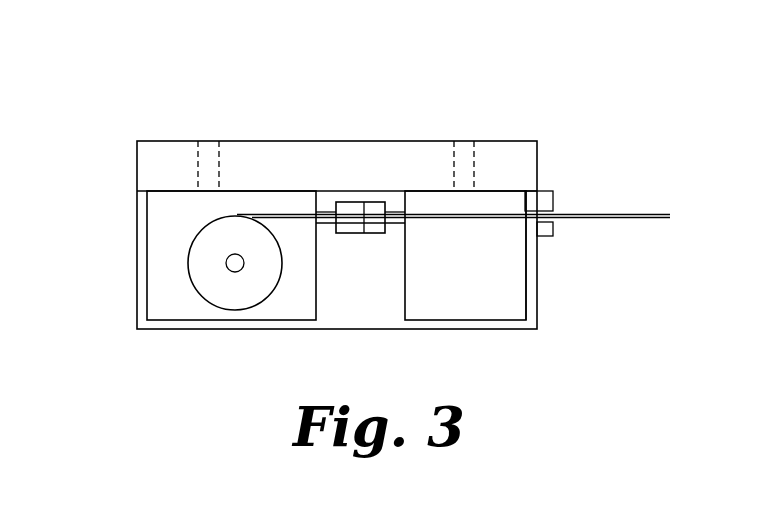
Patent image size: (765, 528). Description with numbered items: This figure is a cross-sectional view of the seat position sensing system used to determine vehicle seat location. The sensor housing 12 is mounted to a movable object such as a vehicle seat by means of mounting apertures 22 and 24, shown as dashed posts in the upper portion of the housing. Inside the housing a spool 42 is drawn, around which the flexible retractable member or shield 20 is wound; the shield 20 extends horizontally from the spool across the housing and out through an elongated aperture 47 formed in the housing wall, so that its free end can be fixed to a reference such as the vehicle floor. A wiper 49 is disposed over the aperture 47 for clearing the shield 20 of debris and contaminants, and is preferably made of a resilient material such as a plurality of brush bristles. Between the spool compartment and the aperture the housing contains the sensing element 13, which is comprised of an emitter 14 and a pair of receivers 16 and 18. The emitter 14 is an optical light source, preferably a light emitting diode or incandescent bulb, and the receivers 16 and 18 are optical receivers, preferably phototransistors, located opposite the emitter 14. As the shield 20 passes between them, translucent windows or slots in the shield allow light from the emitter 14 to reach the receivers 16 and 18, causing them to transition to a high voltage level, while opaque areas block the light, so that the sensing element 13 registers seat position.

The sensor housing 12 is at (145, 247).
The sensing element 13 is at (336, 233).
The emitter 14 is at (364, 202).
The receiver 16 is at (407, 285).
The receiver 18 is at (364, 233).
The shield 20 is at (575, 214).
The mounting aperture 22 is at (210, 141).
The mounting aperture 24 is at (464, 141).
The tape supply spool 42 is at (240, 292).
The elongated aperture 47 is at (526, 219).
The wiper 49 is at (547, 191).